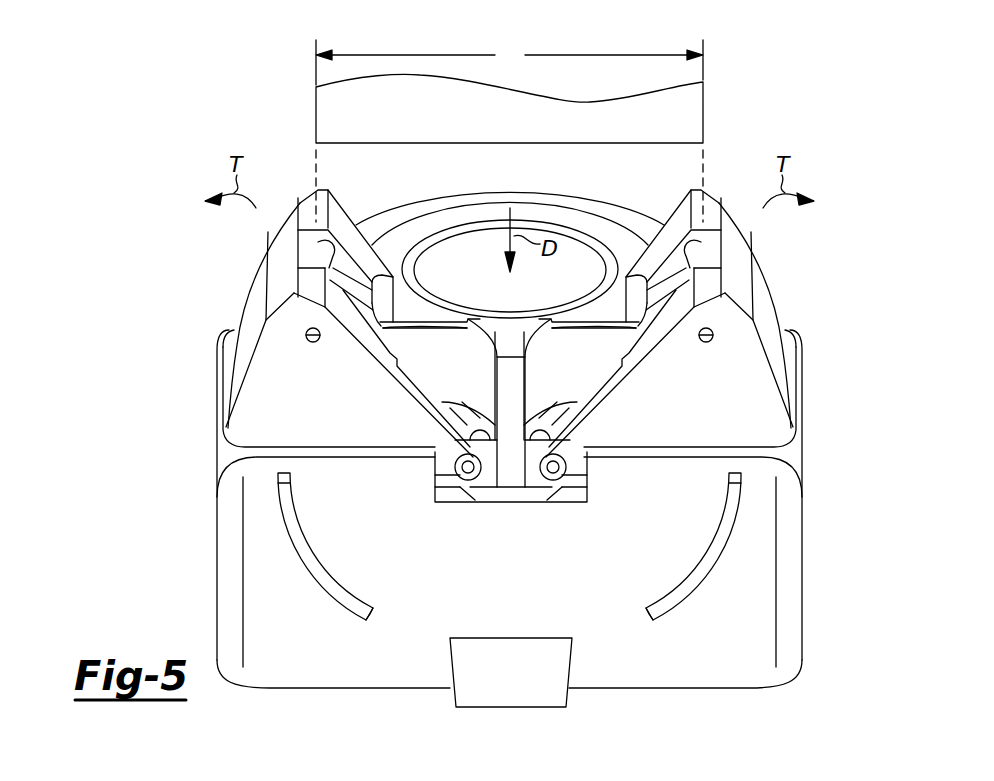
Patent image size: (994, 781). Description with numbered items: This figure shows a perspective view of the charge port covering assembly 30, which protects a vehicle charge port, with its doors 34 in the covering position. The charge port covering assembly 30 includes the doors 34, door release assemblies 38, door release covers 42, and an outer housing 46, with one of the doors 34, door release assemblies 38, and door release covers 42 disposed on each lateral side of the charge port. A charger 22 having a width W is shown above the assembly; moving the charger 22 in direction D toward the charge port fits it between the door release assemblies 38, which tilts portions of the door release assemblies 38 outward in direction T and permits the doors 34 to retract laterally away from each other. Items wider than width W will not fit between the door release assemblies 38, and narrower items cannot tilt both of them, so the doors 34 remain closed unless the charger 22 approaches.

The charger 22 is at (688, 106).
The charge port covering assembly 30 is at (811, 339).
The doors 34 is at (468, 378).
The door release assemblies 38 is at (325, 243).
The door release covers 42 is at (370, 420).
The outer housing 46 is at (742, 606).